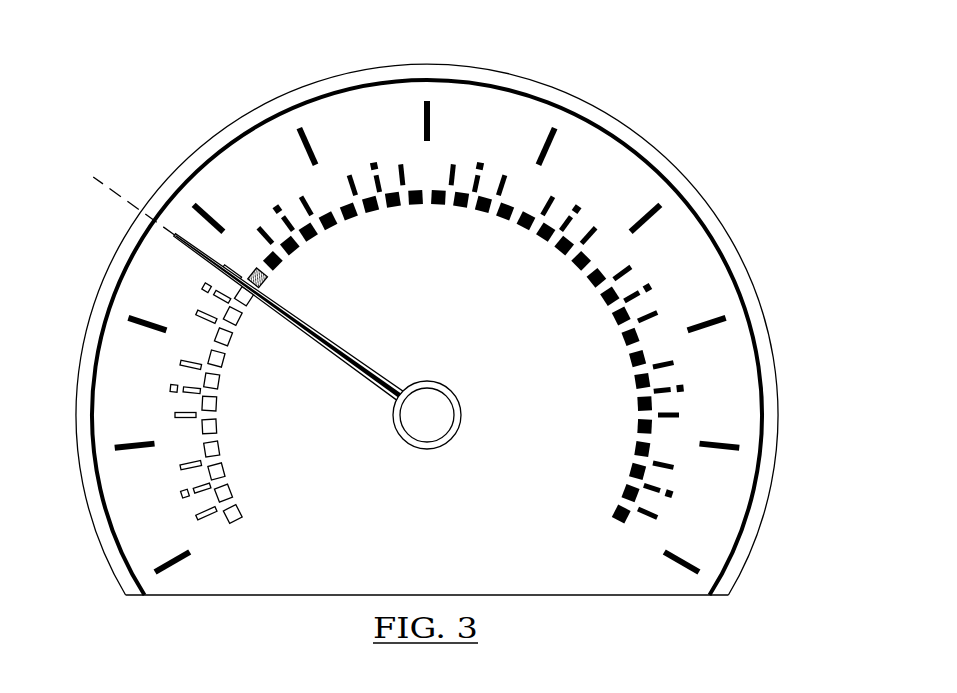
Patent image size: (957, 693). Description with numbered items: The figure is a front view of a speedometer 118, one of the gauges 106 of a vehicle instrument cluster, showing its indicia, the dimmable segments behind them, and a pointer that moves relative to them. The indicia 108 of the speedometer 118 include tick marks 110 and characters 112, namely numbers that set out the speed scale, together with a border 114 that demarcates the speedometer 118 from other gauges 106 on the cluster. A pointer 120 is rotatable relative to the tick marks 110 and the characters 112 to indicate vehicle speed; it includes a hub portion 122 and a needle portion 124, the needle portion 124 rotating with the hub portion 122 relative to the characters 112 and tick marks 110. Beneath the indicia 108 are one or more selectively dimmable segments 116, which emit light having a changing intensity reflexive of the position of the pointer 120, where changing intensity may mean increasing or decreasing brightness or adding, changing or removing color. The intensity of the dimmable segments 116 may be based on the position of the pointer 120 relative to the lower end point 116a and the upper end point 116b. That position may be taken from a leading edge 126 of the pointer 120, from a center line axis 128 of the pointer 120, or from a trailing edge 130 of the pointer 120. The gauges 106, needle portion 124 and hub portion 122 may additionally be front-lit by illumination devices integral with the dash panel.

The gauge 106 is at (398, 308).
The indicia 108 is at (427, 356).
The tick marks 110 is at (407, 341).
The characters 112 is at (427, 331).
The border 114 is at (398, 337).
The selectively dimmable segments 116 is at (427, 356).
The lower end point 116a is at (304, 158).
The upper end point 116b is at (334, 146).
The speedometer 118 is at (427, 317).
The pointer 120 is at (280, 308).
The hub portion 122 is at (448, 399).
The needle portion 124 is at (288, 334).
The leading edge 126 is at (313, 284).
The center line axis 128 is at (116, 201).
The trailing edge 130 is at (278, 320).